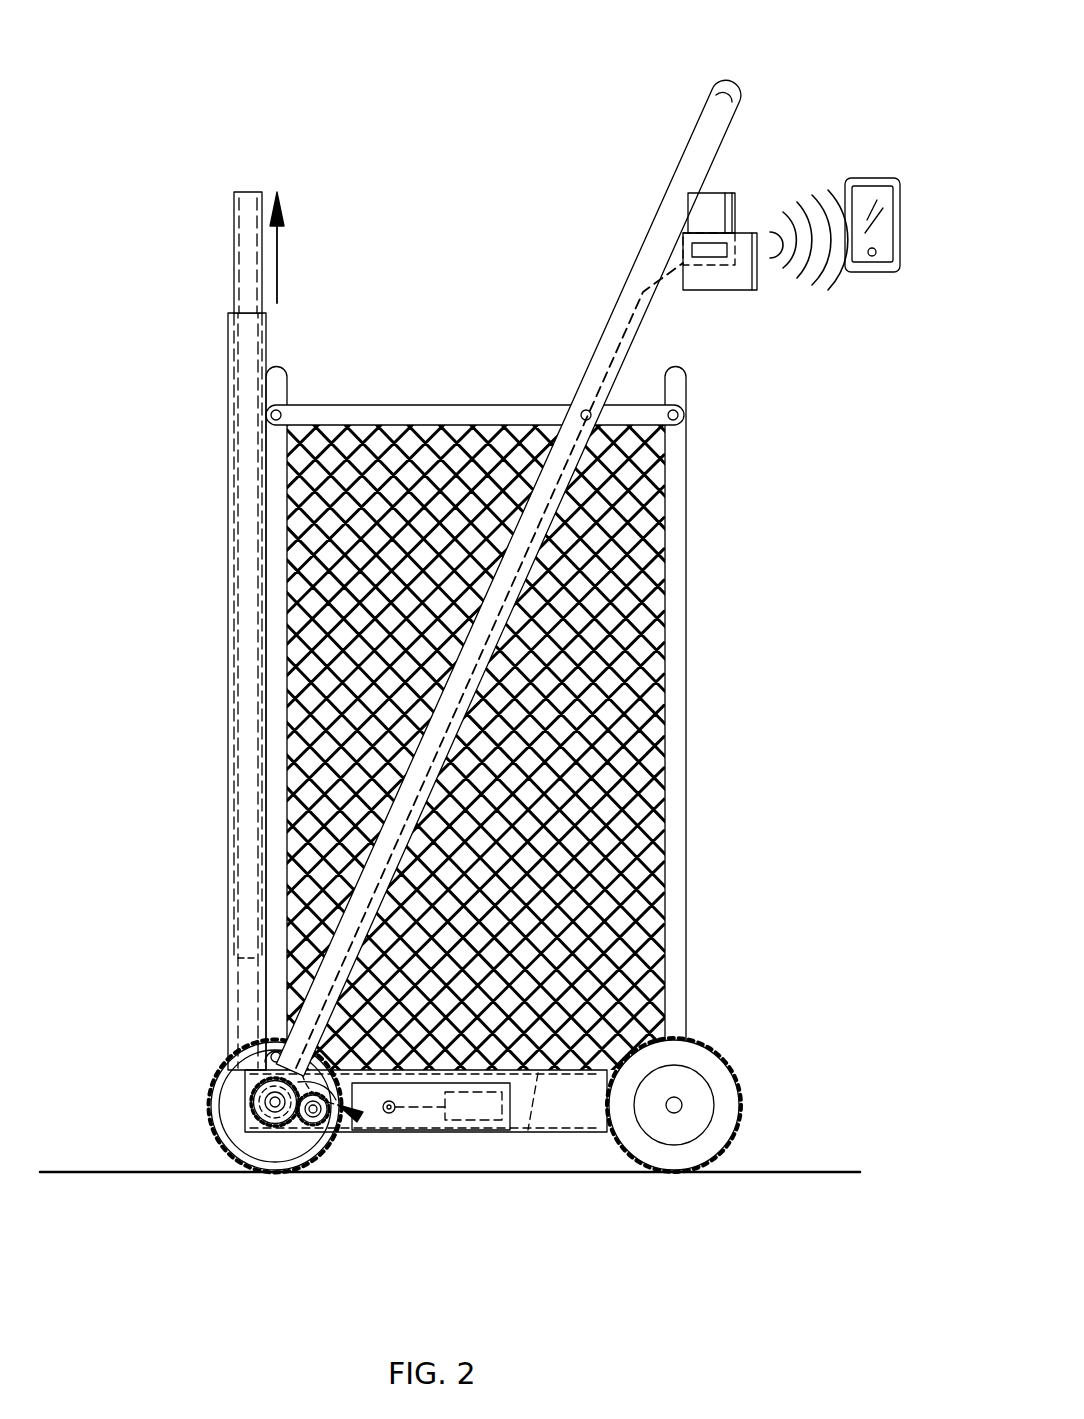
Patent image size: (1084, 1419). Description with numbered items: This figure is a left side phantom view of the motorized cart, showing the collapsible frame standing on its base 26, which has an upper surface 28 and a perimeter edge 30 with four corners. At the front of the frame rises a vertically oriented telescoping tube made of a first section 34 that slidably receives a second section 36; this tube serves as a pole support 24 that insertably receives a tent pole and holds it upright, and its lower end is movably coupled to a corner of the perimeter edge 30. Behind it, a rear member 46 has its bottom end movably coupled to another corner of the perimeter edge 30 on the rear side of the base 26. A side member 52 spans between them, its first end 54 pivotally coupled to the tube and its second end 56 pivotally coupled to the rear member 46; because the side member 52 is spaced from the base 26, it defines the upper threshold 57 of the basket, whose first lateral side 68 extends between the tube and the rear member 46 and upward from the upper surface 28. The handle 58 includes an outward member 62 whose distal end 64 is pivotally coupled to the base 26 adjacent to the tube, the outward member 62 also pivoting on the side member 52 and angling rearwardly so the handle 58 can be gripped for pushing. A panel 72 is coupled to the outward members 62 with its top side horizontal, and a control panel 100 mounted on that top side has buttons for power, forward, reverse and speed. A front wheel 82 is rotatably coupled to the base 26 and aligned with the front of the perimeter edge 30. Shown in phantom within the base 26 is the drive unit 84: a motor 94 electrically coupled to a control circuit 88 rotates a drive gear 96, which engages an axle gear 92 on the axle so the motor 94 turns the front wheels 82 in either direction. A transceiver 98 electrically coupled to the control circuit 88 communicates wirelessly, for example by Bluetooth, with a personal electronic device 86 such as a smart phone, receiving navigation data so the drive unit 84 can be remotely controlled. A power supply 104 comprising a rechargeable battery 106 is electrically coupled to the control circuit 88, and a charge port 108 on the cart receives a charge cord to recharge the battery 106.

The pole support 24 is at (246, 142).
The base 26 is at (585, 1138).
The upper surface 28 is at (600, 1055).
The perimeter edge 30 is at (250, 1102).
The first section 34 is at (202, 657).
The second section 36 is at (206, 245).
The rear member 46 is at (686, 750).
The side member 52 is at (483, 410).
The first end 54 is at (270, 415).
The second end 56 is at (690, 415).
The upper threshold 57 is at (368, 364).
The handle 58 is at (720, 88).
The outward member 62 is at (650, 232).
The distal end 64 is at (270, 1052).
The first lateral side 68 is at (618, 540).
The panel 72 is at (758, 248).
The front wheel 82 is at (256, 1090).
The drive unit 84 is at (392, 1114).
The personal electronic device 86 is at (898, 182).
The control circuit 88 is at (510, 1102).
The axle gear 92 is at (305, 1122).
The motor 94 is at (348, 1120).
The drive gear 96 is at (285, 1160).
The transceiver 98 is at (712, 247).
The control panel 100 is at (738, 267).
The power supply 104 is at (581, 1134).
The rechargeable battery 106 is at (497, 1130).
The charge port 108 is at (432, 1125).